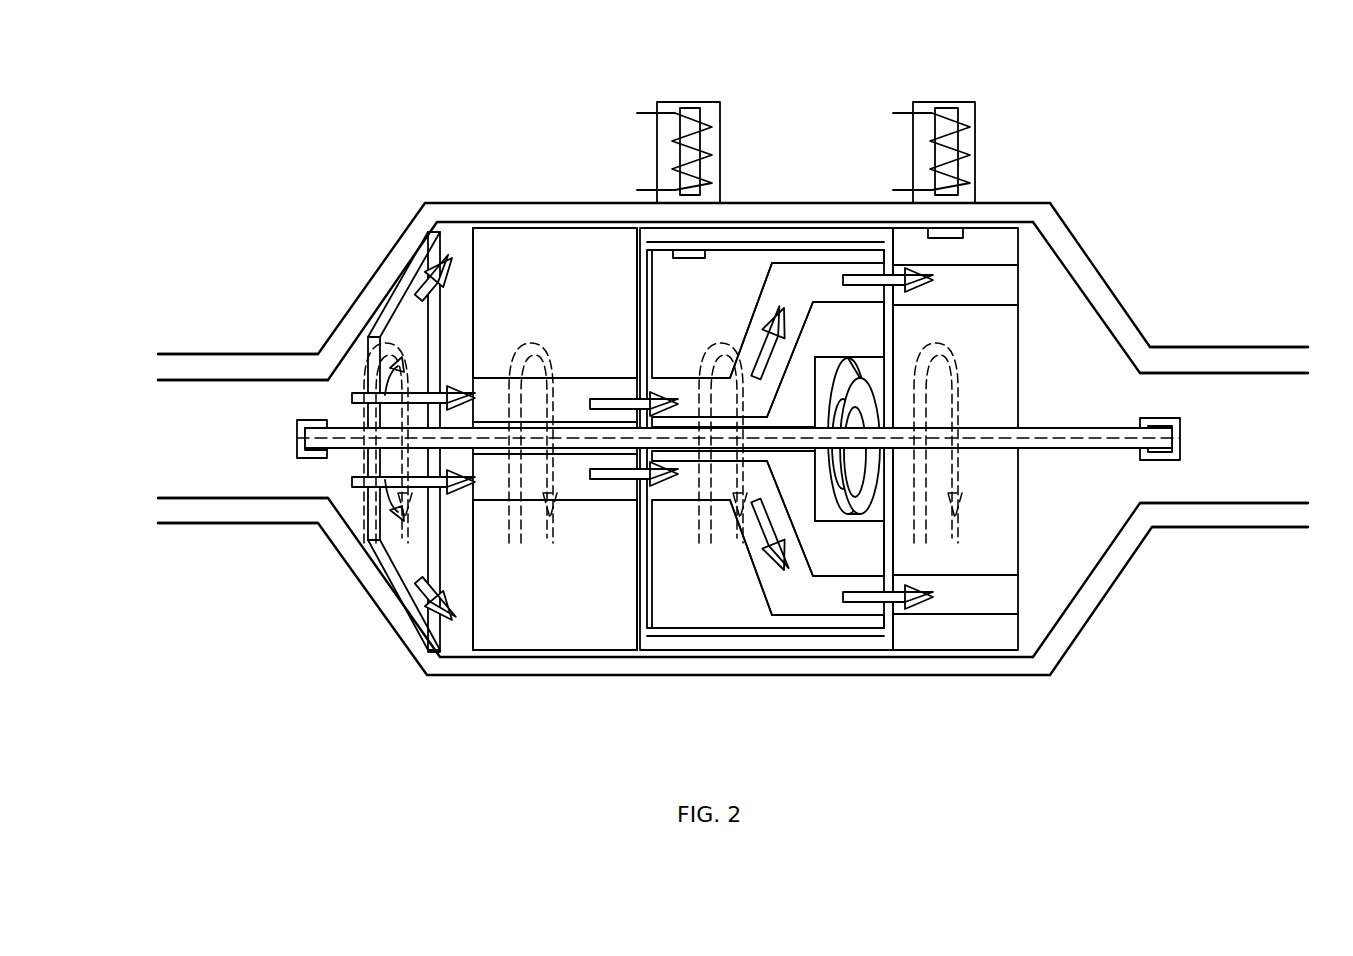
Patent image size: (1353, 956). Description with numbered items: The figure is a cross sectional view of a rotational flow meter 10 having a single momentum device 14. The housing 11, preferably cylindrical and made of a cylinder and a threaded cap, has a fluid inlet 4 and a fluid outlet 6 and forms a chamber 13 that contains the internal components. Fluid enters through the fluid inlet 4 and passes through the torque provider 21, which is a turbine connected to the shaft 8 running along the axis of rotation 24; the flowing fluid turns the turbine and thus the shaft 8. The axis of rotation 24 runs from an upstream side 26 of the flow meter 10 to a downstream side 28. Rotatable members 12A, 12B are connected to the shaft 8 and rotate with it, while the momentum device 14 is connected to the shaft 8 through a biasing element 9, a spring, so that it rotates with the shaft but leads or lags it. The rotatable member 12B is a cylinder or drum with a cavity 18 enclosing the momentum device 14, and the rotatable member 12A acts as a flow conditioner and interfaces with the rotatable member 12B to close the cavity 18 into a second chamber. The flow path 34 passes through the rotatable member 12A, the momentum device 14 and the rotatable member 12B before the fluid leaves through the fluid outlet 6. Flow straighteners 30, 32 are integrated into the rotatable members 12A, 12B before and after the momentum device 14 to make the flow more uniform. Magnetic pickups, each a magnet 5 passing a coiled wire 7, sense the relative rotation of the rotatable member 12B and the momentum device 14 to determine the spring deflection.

The fluid inlet 4 is at (158, 395).
The magnet 5 is at (698, 255).
The fluid outlet 6 is at (1300, 387).
The coiled wire 7 is at (690, 108).
The shaft 8 is at (305, 443).
The biasing element 9 is at (847, 508).
The rotational flow meter 10 is at (733, 398).
The housing 11 is at (480, 208).
The rotatable member 12A is at (550, 632).
The rotatable member 12B is at (990, 637).
The chamber 13 is at (1032, 238).
The momentum device 14 is at (698, 618).
The cavity 18 is at (766, 632).
The torque provider 21 is at (397, 305).
The axis of rotation 24 is at (1157, 442).
The upstream side 26 is at (265, 395).
The downstream side 28 is at (1222, 395).
The flow straightener 30 is at (512, 400).
The flow straightener 32 is at (990, 283).
The flow path 34 is at (801, 280).